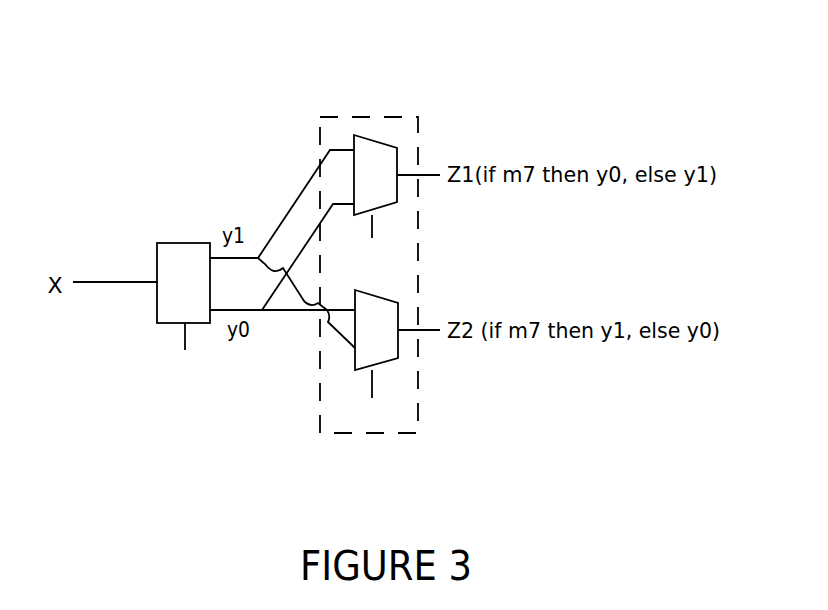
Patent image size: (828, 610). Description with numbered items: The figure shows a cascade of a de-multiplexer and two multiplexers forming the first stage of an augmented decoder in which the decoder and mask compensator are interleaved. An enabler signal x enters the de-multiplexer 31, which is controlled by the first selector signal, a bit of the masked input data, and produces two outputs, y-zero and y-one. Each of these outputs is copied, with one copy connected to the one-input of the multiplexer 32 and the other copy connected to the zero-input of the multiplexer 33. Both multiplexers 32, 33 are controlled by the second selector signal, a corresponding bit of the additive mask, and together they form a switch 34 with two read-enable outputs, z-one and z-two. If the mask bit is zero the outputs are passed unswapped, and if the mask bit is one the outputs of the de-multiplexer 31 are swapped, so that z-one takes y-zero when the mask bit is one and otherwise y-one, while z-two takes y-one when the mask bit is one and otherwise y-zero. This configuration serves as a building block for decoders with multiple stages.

The de-multiplexer 31 is at (173, 248).
The multiplexer 32 is at (378, 134).
The multiplexer 33 is at (395, 371).
The switch 34 is at (427, 114).